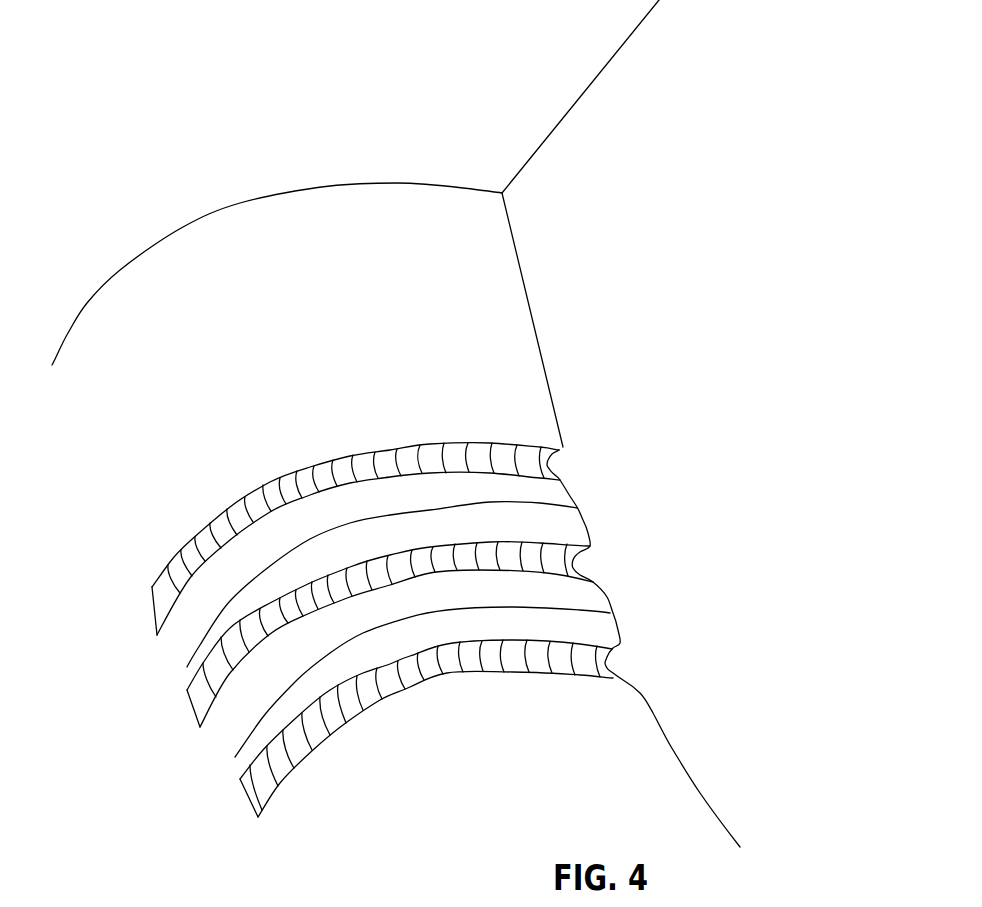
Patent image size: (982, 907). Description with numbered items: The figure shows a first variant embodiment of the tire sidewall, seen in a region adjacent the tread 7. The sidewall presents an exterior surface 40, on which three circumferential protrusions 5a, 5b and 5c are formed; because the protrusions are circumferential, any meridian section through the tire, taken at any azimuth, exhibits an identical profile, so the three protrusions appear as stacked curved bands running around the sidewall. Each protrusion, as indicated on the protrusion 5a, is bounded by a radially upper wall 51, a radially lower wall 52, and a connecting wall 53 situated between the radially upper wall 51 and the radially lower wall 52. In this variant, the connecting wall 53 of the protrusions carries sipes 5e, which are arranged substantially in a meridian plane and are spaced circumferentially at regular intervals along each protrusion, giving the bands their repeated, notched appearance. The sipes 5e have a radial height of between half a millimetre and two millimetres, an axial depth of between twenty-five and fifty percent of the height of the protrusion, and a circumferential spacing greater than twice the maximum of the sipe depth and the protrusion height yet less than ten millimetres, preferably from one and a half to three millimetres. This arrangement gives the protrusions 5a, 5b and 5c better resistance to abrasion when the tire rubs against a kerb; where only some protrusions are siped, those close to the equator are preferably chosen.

The tread 7 is at (628, 70).
The exterior surface 40 is at (361, 394).
The radially upper wall 51 is at (555, 438).
The radially lower wall 52 is at (558, 495).
The connecting wall 53 is at (407, 447).
The circumferential protrusion 5a is at (422, 499).
The circumferential protrusion 5b is at (589, 563).
The circumferential protrusion 5c is at (627, 664).
The sipes 5e is at (248, 522).